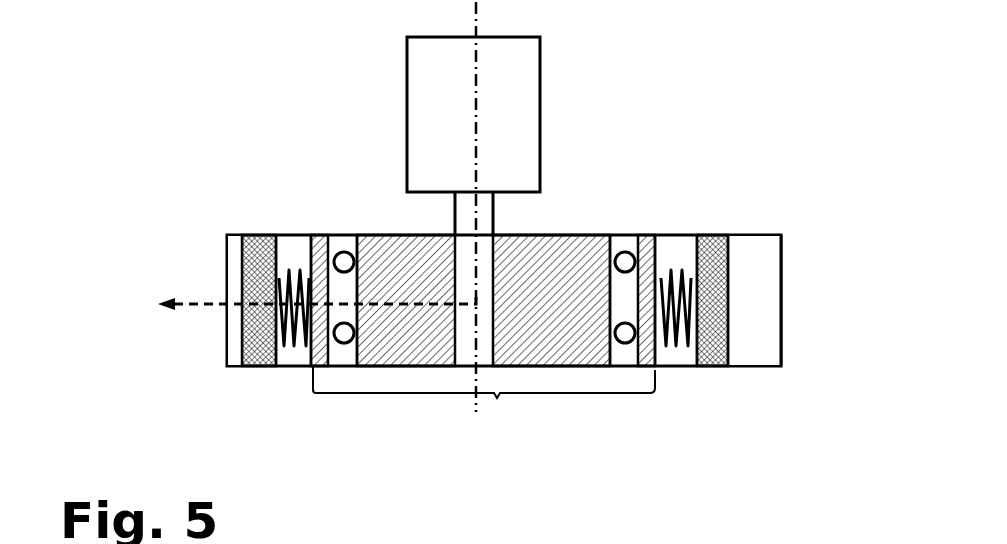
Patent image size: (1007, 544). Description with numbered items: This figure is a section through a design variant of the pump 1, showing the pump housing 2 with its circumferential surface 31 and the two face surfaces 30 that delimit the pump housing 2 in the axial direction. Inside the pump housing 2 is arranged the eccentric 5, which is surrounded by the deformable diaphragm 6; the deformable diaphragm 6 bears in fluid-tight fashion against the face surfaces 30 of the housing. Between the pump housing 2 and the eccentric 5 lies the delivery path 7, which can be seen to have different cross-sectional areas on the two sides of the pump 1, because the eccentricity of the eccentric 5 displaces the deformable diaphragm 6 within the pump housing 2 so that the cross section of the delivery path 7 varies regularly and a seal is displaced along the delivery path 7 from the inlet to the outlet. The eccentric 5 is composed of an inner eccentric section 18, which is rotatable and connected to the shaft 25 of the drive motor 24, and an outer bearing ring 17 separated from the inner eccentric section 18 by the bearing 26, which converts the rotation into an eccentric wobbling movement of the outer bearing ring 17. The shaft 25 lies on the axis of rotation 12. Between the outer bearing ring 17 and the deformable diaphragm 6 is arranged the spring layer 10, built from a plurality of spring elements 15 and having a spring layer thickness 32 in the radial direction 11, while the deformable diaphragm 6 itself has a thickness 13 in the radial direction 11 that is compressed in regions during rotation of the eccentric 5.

The pump 1 is at (218, 106).
The pump housing 2 is at (232, 243).
The eccentric 5 is at (497, 398).
The deformable diaphragm 6 is at (258, 240).
The delivery path 7 is at (234, 335).
The spring layer 10 is at (672, 355).
The radial direction 11 is at (187, 302).
The axis of rotation 12 is at (480, 12).
The thickness 13 is at (243, 366).
The spring elements 15 is at (683, 350).
The outer bearing ring 17 is at (320, 238).
The inner eccentric section 18 is at (400, 243).
The drive motor 24 is at (540, 150).
The shaft 25 is at (493, 218).
The bearing 26 is at (345, 242).
The face surfaces 30 is at (753, 234).
The circumferential surface 31 is at (785, 345).
The spring layer thickness 32 is at (276, 366).